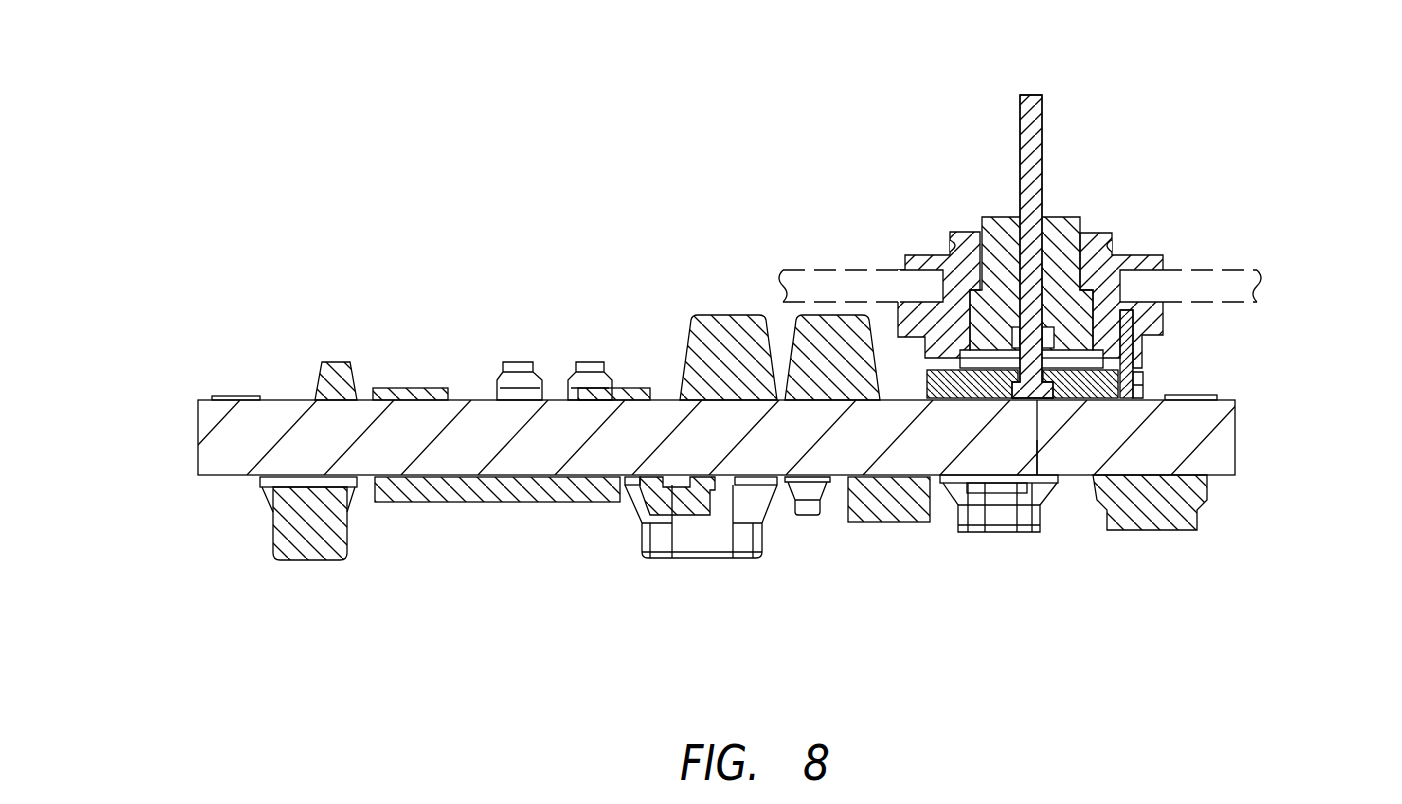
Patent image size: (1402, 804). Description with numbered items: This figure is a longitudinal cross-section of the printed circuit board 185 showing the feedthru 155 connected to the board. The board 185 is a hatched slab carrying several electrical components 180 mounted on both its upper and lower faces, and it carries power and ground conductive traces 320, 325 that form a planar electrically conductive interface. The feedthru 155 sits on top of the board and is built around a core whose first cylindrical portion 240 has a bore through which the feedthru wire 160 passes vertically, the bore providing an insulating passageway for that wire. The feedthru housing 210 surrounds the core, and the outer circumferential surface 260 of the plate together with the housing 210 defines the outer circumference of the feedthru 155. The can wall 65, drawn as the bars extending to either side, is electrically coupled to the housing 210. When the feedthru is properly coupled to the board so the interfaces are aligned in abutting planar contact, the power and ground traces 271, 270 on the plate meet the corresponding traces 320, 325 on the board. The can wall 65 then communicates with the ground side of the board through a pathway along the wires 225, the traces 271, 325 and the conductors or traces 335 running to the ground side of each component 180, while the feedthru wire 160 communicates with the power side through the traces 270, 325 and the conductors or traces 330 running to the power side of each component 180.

The can wall 65 is at (847, 268).
The feedthru 155 is at (968, 185).
The feedthru wire 160 is at (1043, 125).
The electrical components 180 is at (335, 360).
The printed circuit board 185 is at (198, 457).
The housing 210 is at (1137, 253).
The wires 225 is at (1133, 308).
The first cylindrical portion 240 is at (1062, 215).
The outer circumferential surface 260 is at (1140, 385).
The ground conductive trace 270 is at (1259, 407).
The power conductive trace 271 is at (1076, 491).
The power conductive trace 320 is at (1042, 402).
The ground conductive trace 325 is at (1137, 400).
The conductors or traces 330 is at (1035, 460).
The conductors or traces 335 is at (897, 398).